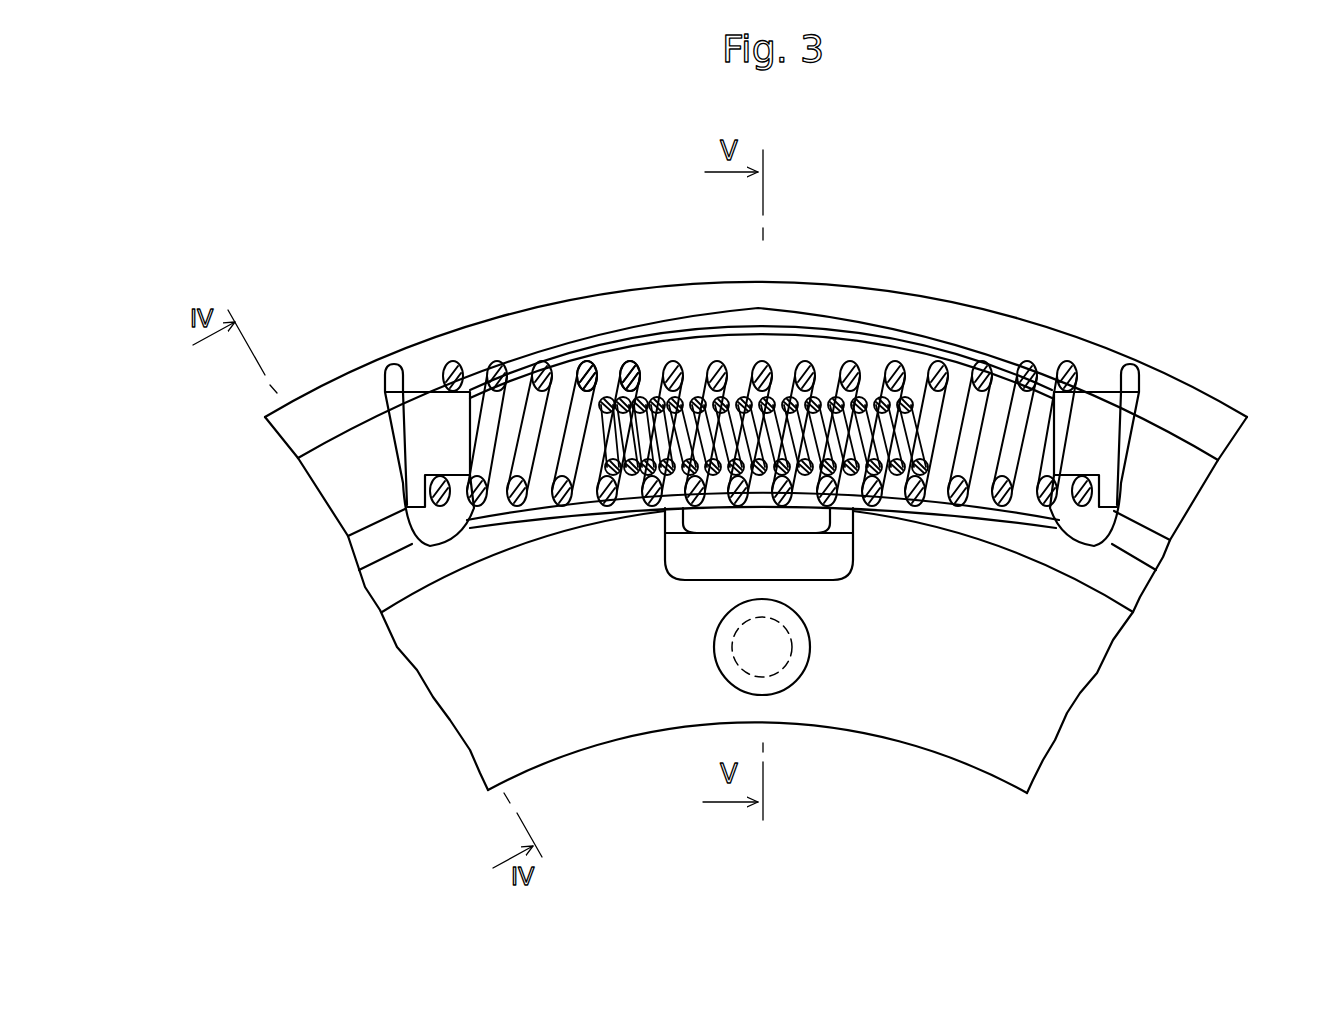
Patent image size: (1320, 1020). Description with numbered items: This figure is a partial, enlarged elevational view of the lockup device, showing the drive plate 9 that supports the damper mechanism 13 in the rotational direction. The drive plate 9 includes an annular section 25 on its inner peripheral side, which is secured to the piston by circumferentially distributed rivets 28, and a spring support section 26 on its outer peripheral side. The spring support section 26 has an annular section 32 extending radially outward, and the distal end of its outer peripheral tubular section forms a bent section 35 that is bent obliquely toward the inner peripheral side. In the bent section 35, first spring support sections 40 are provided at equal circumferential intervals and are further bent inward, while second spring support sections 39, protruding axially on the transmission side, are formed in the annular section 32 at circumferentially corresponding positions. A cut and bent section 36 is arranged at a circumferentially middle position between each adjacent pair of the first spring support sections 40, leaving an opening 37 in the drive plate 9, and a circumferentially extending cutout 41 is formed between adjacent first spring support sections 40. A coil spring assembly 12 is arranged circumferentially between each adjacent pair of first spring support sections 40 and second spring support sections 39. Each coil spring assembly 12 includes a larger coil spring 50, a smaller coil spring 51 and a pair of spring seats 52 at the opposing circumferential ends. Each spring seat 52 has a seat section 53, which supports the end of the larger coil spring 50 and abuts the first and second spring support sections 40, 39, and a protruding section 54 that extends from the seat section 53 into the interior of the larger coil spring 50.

The drive plate 9 is at (1022, 302).
The coil spring assembly 12 is at (678, 345).
The damper mechanism 13 is at (795, 313).
The annular section 25 is at (1098, 697).
The spring support section 26 is at (1203, 523).
The rivet 28 is at (770, 653).
The annular section 32 is at (330, 486).
The bent section 35 is at (650, 293).
The cut and bent section 36 is at (783, 495).
The opening 37 is at (683, 565).
The second spring support section 39 is at (365, 543).
The first spring support section 40 is at (328, 398).
The cutout 41 is at (823, 347).
The larger coil spring 50 is at (588, 362).
The smaller coil spring 51 is at (645, 375).
The spring seat 52 is at (440, 420).
The seat section 53 is at (420, 487).
The protruding section 54 is at (458, 408).